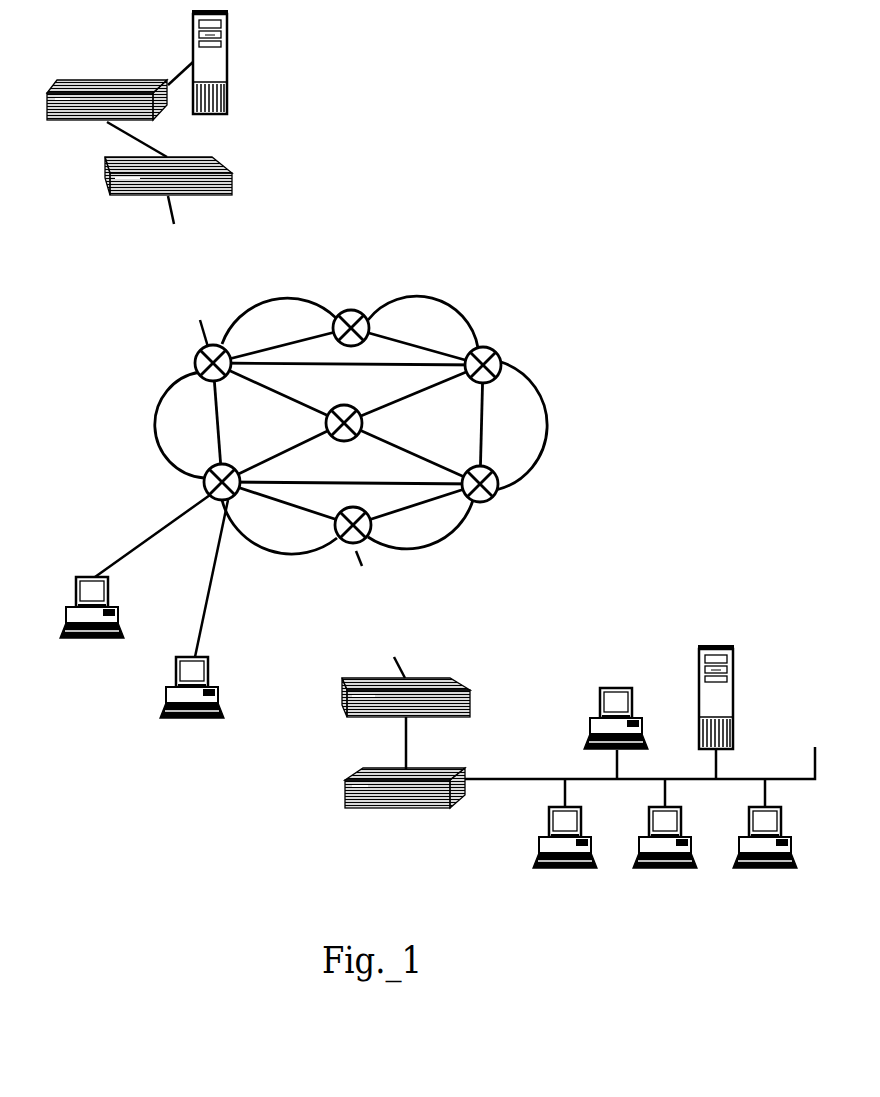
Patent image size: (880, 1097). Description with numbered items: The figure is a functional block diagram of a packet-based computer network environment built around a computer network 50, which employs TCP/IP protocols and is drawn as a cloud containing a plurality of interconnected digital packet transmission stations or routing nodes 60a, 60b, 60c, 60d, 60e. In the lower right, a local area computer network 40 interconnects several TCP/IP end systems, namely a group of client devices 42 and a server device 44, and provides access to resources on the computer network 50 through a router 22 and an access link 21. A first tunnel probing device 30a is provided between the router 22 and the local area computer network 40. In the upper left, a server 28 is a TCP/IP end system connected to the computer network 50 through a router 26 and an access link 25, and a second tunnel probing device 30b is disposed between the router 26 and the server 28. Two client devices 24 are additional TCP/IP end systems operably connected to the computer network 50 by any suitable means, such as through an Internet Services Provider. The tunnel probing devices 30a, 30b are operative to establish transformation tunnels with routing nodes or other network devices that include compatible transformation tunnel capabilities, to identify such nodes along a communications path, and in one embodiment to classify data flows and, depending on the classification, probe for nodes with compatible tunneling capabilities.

The access link 21 is at (434, 677).
The router 22 is at (441, 673).
The client devices 24 is at (107, 640).
The access link 25 is at (183, 197).
The router 26 is at (232, 185).
The server 28 is at (228, 59).
The tunnel probing device 30a is at (435, 812).
The tunnel probing device 30b is at (73, 79).
The local area computer network 40 is at (815, 747).
The client devices 42 is at (615, 687).
The server device 44 is at (723, 645).
The computer network 50 is at (263, 297).
The routing node 60a is at (343, 543).
The routing node 60b is at (202, 492).
The routing node 60c is at (202, 347).
The routing node 60d is at (324, 423).
The routing node 60e is at (352, 310).